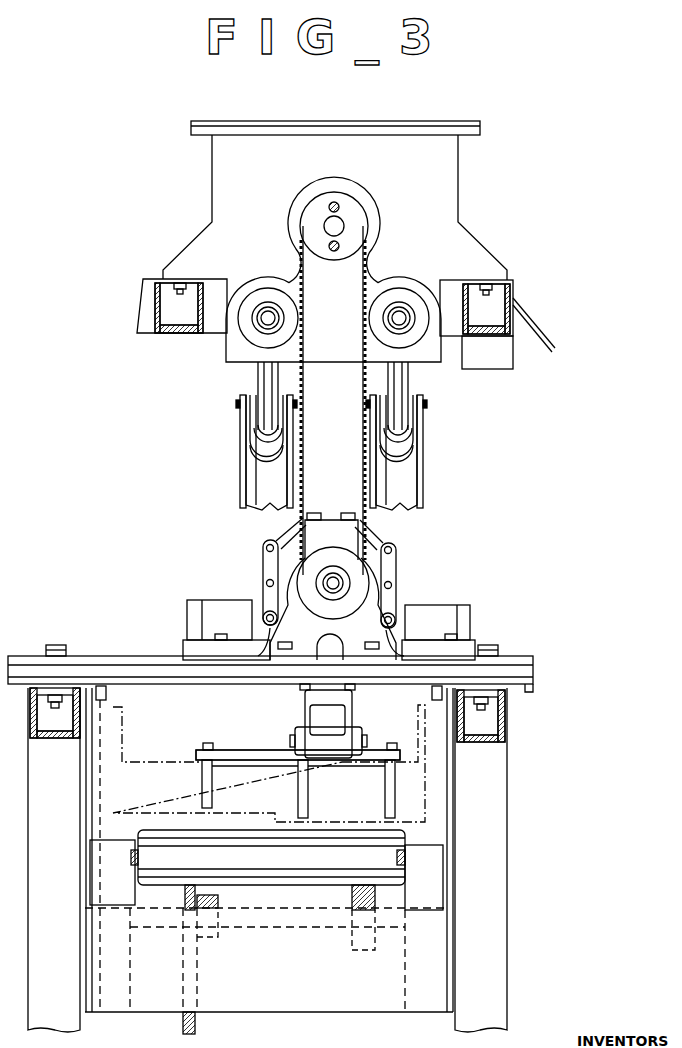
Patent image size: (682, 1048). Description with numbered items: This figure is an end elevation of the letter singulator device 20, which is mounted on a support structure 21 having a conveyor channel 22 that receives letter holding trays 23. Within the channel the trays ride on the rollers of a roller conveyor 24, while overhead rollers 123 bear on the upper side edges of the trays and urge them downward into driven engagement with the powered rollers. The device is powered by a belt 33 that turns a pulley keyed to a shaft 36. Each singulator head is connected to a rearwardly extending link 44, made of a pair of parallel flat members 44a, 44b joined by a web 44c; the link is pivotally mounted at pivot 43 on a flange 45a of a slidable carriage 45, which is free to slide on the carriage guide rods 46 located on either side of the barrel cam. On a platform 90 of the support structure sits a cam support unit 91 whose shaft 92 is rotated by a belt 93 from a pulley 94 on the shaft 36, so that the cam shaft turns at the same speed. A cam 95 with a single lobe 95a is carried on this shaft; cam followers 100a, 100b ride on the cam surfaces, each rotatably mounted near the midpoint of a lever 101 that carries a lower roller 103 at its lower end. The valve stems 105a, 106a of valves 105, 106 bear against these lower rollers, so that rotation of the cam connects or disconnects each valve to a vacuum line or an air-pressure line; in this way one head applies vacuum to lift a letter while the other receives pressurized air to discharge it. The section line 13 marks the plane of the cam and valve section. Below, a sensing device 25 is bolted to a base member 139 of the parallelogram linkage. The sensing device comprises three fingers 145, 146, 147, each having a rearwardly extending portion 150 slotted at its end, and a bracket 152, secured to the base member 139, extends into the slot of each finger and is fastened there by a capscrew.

The section line 13- 13 is at (178, 578).
The letter singulator device 20 is at (128, 184).
The support structure 21 is at (512, 876).
The conveyor channel 22 is at (100, 882).
The letter holding tray 23 is at (82, 810).
The roller conveyor 24 is at (398, 846).
The sensing device 25 is at (238, 748).
The belt 33 is at (556, 346).
The shaft 36 is at (340, 226).
The pivot 43 is at (240, 410).
The link 44 is at (243, 434).
The flat member 44a is at (290, 445).
The flat member 44b is at (243, 461).
The web 44c is at (257, 480).
The slidable carriage 45 is at (258, 375).
The flange 45a is at (262, 415).
The carriage guide rod 46 is at (396, 320).
The platform 90 is at (538, 668).
The cam support unit 91 is at (318, 638).
The shaft 92 is at (332, 577).
The belt 93 is at (360, 285).
The pulley 94 is at (349, 200).
The cam 95 is at (392, 548).
The lobe 95a is at (270, 542).
The cam follower 100a is at (265, 583).
The cam follower 100b is at (393, 583).
The lever 101 is at (265, 565).
The lower roller 103 is at (248, 650).
The valve 105 is at (200, 630).
The valve stem 105a is at (226, 620).
The valve 106 is at (455, 632).
The valve stem 106a is at (434, 622).
The overhead roller 123 is at (112, 690).
The base member 139 is at (356, 738).
The finger 145 is at (202, 786).
The finger 146 is at (298, 800).
The finger 147 is at (385, 802).
The rearwardly extending portion 150 is at (270, 750).
The bracket 152 is at (296, 770).